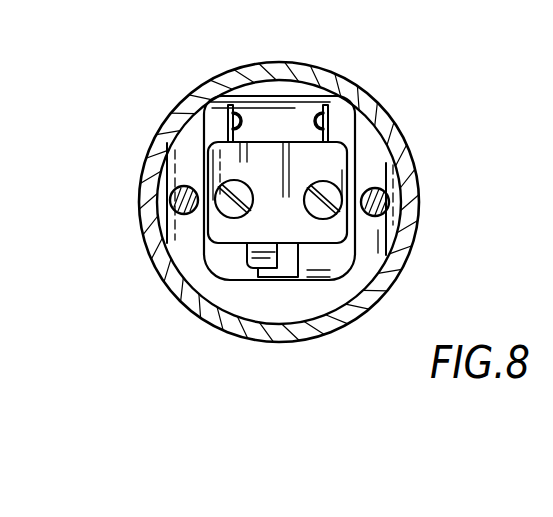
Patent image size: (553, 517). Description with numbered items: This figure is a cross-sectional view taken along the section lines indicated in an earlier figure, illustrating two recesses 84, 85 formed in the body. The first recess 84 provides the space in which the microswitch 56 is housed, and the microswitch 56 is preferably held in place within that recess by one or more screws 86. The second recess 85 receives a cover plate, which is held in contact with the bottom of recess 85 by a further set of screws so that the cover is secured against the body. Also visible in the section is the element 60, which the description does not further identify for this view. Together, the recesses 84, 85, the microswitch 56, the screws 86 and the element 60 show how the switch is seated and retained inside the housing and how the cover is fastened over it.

The microswitch 56 is at (198, 108).
The recess 84 is at (282, 108).
The recess 85 is at (368, 145).
The screws 86 is at (315, 208).
The connector 60 is at (288, 319).